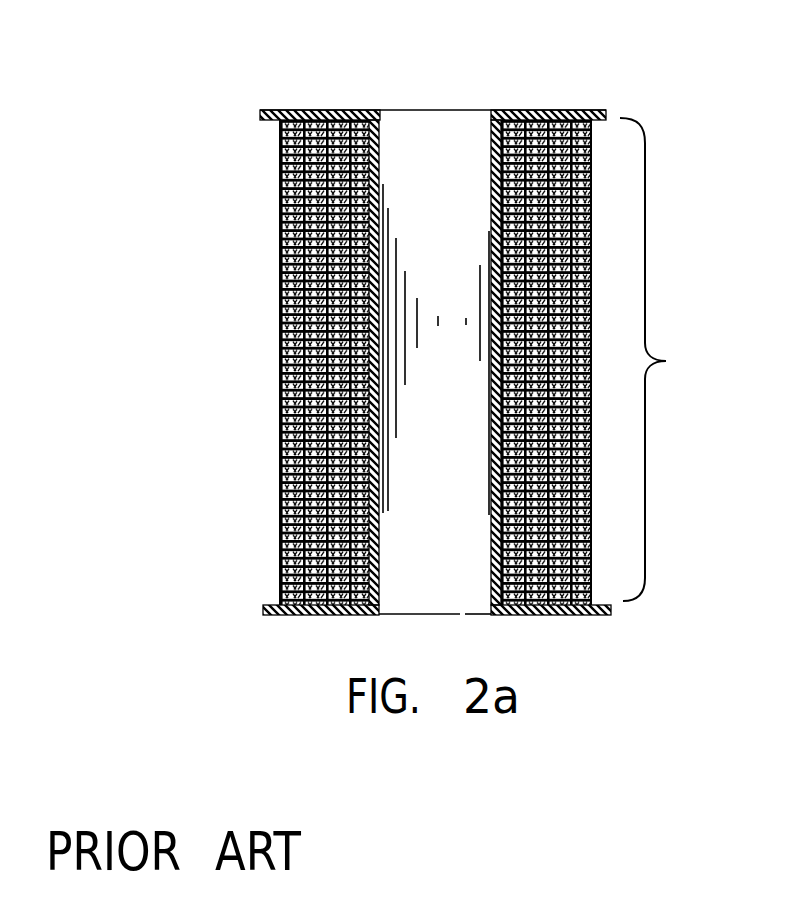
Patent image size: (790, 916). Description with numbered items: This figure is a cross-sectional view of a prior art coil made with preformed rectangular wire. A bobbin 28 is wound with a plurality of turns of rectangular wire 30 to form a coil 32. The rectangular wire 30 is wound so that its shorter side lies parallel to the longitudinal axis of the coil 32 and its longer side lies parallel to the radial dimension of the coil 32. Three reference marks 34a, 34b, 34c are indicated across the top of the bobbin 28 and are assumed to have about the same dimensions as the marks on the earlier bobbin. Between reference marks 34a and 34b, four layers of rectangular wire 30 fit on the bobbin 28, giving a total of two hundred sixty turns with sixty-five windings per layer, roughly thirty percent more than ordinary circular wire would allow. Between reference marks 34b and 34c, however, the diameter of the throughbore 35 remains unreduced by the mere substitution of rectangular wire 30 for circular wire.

The reference mark 34a is at (272, 100).
The reference mark 34b is at (360, 100).
The reference mark 34c is at (491, 100).
The rectangular wire 30 is at (272, 250).
The throughbore 35 is at (482, 165).
The coil 32 is at (660, 359).
The bobbin 28 is at (550, 607).